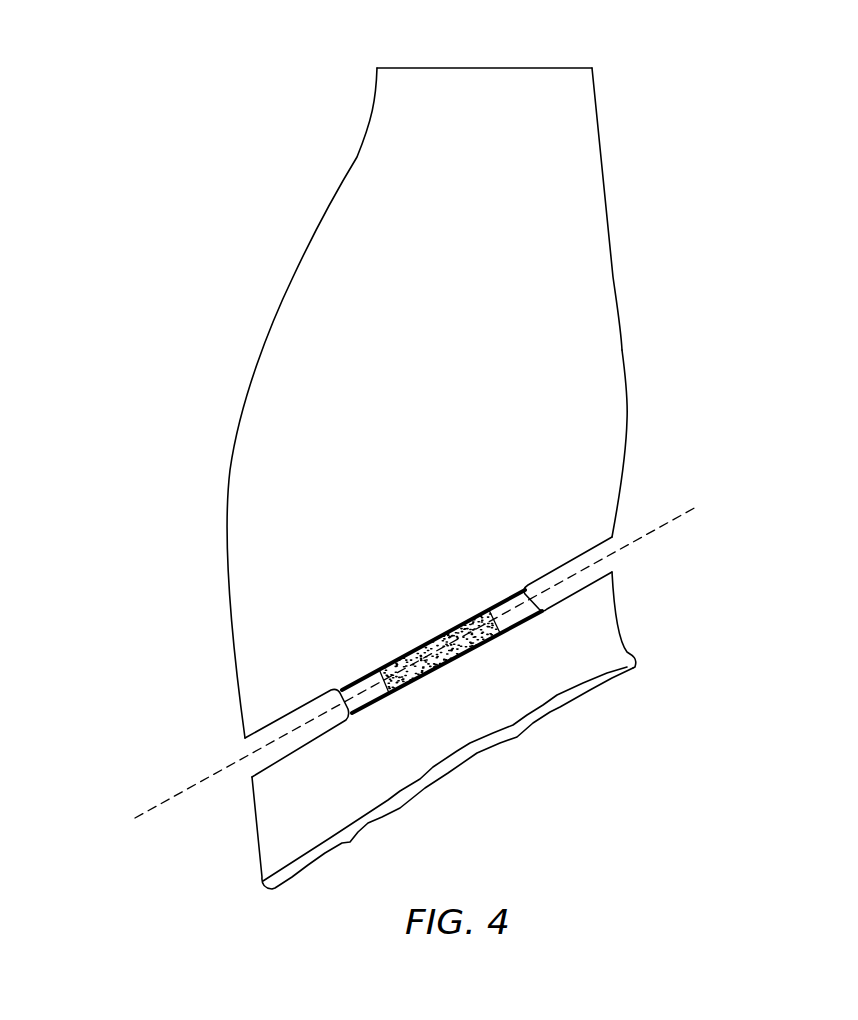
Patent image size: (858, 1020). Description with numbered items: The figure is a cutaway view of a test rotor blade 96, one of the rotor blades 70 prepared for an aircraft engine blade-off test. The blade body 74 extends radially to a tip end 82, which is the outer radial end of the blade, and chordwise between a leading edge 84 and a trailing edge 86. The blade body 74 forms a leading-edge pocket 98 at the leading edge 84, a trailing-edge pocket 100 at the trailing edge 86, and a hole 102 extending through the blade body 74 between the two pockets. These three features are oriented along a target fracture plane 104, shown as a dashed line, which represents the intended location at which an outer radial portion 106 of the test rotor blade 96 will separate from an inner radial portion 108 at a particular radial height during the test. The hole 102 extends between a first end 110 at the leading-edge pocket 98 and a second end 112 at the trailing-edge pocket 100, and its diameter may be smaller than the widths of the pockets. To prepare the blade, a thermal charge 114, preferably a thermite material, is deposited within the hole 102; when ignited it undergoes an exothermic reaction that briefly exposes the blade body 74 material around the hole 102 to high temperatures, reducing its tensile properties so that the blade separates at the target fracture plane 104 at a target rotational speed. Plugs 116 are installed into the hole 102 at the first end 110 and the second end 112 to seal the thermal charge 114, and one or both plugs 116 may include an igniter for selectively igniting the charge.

The blade 70 is at (763, 148).
The blade body 74 is at (648, 389).
The tip end 82 is at (520, 67).
The leading edge 84 is at (226, 500).
The trailing edge 86 is at (620, 330).
The test rotor blade 96 is at (710, 272).
The leading-edge pocket 98 is at (273, 780).
The trailing-edge pocket 100 is at (602, 594).
The hole 102 is at (516, 646).
The target fracture plane 104 is at (665, 523).
The outer radial portion 106 is at (603, 460).
The inner radial portion 108 is at (493, 697).
The first end 110 is at (344, 670).
The second end 112 is at (510, 575).
The thermal charge 114 is at (473, 616).
The plugs 116 is at (280, 732).